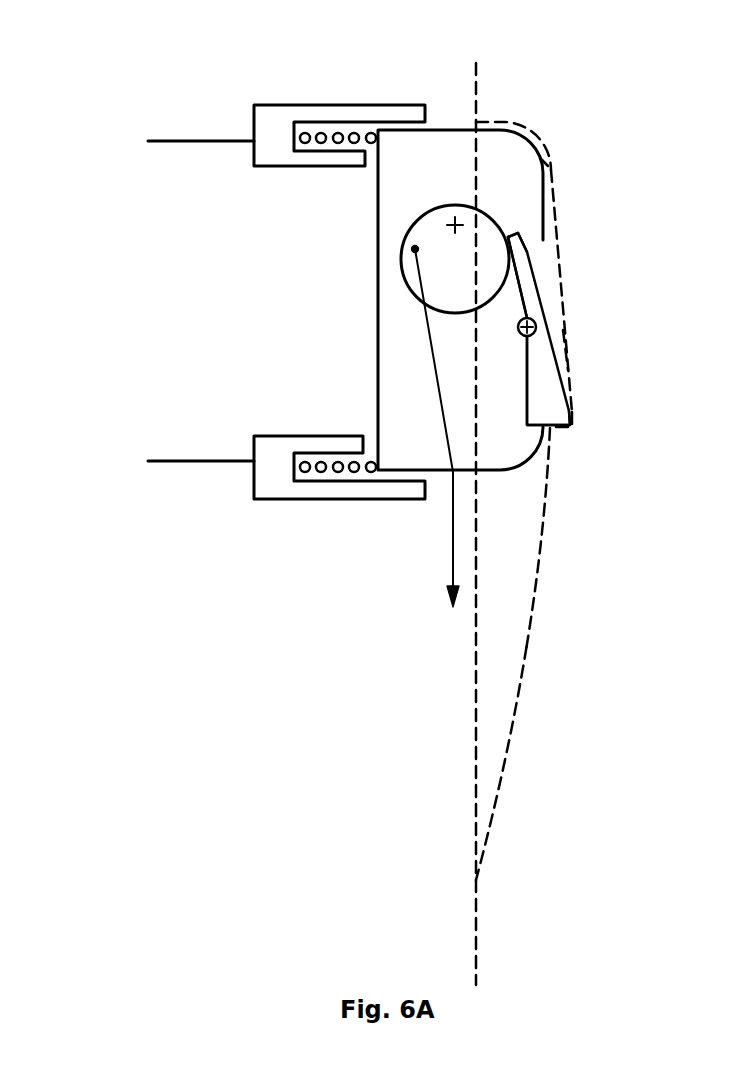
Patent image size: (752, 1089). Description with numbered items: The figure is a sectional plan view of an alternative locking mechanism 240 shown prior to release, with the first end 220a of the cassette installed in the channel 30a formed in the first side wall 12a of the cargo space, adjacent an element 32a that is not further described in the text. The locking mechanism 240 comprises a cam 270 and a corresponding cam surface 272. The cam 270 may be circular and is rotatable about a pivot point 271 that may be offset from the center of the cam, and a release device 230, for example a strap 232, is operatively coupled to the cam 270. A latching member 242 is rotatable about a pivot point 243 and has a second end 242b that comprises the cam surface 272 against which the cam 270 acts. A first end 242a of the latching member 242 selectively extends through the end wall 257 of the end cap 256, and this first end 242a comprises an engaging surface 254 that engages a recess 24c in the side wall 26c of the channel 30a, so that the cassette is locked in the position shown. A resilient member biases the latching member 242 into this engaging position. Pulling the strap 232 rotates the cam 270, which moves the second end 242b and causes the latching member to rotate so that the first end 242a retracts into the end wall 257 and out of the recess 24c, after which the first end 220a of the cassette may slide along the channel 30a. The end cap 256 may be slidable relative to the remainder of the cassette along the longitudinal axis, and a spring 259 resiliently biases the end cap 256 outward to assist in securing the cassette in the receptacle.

The first end of the cassette 220a is at (445, 128).
The end cap 256 is at (492, 127).
The outer surface 32a is at (520, 126).
The end wall of the end cap 257 is at (553, 198).
The spring 259 is at (320, 145).
The pivot point of the cam 271 is at (455, 216).
The cam 270 is at (430, 230).
The cam surface 272 is at (515, 232).
The second end of the latching member 242b is at (530, 252).
The pivot point 243 is at (536, 331).
The latching member 242 is at (563, 338).
The recess 24c is at (565, 372).
The first end of the latching member 242a is at (555, 395).
The engaging surface 254 is at (552, 432).
The locking mechanism 240 is at (312, 280).
The strap 232 is at (452, 510).
The release device 230 is at (452, 565).
The side wall of the channel 26c is at (542, 568).
The channel 30a is at (511, 671).
The first side wall 12a is at (475, 880).